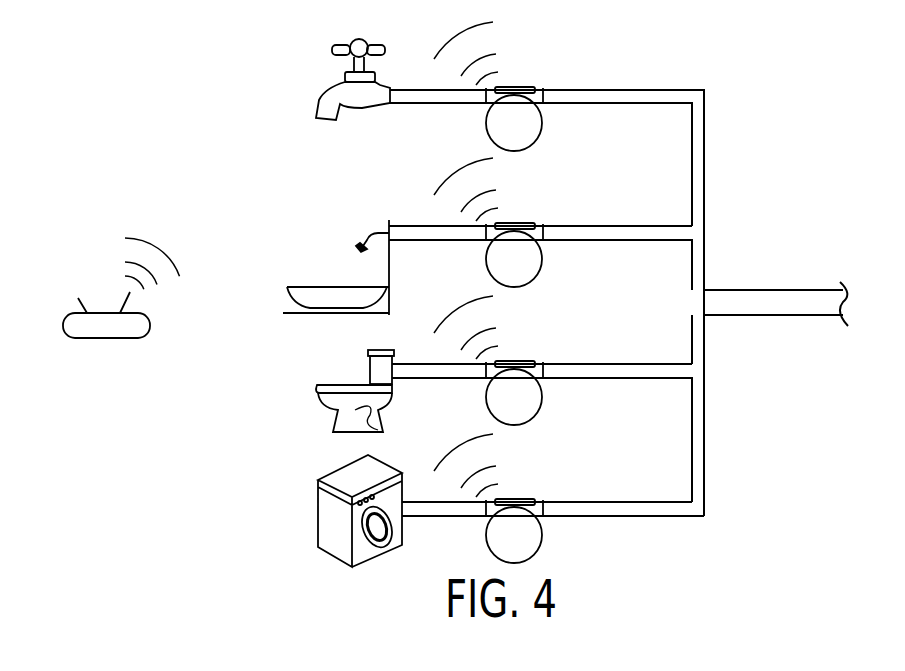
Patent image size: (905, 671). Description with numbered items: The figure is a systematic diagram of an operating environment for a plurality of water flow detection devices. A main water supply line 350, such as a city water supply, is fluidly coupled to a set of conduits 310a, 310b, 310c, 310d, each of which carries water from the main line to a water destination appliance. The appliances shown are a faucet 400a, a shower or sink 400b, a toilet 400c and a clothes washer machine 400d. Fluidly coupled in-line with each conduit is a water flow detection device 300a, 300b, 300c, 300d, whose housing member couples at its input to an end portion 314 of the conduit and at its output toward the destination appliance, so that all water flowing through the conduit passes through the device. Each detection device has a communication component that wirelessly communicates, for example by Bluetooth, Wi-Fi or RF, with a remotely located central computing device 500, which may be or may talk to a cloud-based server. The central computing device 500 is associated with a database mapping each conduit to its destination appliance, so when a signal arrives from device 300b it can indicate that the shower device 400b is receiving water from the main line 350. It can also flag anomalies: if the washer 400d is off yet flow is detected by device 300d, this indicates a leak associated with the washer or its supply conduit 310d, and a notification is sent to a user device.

The water flow detection device 300a is at (538, 86).
The water flow detection device 300b is at (513, 224).
The water flow detection device 300c is at (513, 362).
The water flow detection device 300d is at (513, 500).
The end portion of the conduit 314 is at (543, 102).
The conduit 310a is at (650, 90).
The conduit 310b is at (646, 226).
The conduit 310c is at (646, 364).
The conduit 310d is at (646, 502).
The main water supply line 350 is at (775, 315).
The water destination appliance 400a is at (337, 88).
The water destination appliance 400b is at (338, 285).
The water destination appliance 400c is at (370, 373).
The washer machine appliance 400d is at (345, 470).
The central computing device 500 is at (64, 275).